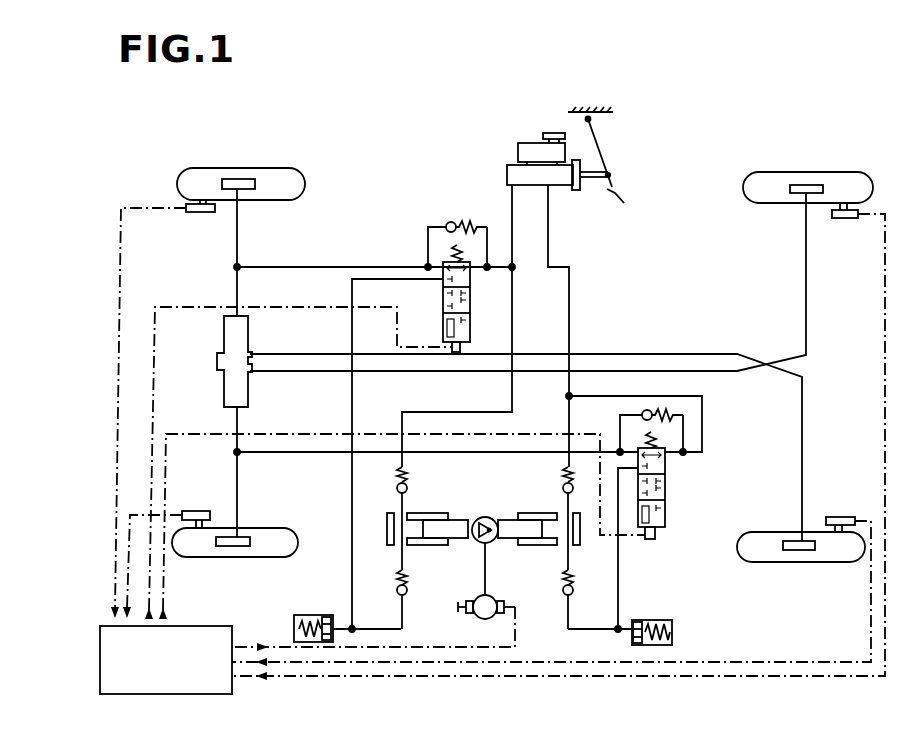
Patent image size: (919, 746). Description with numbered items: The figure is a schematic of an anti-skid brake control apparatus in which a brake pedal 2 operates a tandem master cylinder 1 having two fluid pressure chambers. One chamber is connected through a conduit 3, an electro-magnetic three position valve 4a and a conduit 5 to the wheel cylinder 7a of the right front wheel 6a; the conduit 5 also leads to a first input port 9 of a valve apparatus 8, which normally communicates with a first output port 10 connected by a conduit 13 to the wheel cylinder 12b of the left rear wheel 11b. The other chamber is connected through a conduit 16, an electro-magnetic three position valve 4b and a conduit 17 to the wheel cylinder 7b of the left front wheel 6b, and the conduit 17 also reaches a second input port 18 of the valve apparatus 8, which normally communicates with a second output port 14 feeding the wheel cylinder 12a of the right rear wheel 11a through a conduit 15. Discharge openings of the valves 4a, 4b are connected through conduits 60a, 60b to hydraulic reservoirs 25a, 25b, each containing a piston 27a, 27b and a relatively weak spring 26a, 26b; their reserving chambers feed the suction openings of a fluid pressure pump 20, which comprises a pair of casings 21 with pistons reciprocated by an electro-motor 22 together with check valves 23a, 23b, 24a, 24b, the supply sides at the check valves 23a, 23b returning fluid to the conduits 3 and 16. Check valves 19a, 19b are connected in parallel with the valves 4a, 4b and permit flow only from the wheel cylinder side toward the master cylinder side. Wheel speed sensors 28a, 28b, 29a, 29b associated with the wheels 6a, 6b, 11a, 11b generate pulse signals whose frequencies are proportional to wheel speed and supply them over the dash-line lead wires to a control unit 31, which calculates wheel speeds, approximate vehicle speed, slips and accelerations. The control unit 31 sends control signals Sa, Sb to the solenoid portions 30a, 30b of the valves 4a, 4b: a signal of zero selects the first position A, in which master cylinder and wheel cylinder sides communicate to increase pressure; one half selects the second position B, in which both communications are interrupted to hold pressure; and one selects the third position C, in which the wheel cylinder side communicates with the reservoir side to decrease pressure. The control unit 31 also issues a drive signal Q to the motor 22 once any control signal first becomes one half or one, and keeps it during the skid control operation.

The tandem master cylinder 1 is at (526, 138).
The brake pedal 2 is at (617, 181).
The conduit 3 is at (511, 203).
The electro-magnetic three position valve 4a is at (442, 298).
The electro-magnetic three position valve 4b is at (667, 485).
The conduit 5 is at (358, 267).
The right front wheel 6a is at (288, 178).
The left front wheel 6b is at (188, 556).
The wheel cylinder 7a is at (242, 179).
The wheel cylinder 7b is at (240, 547).
The valve apparatus 8 is at (222, 343).
The first input port 9 is at (236, 315).
The first output port 10 is at (252, 351).
The right rear wheel 11a is at (773, 182).
The left rear wheel 11b is at (768, 562).
The wheel cylinder 12a is at (815, 187).
The wheel cylinder 12b is at (814, 551).
The conduit 13 is at (608, 354).
The second output port 14 is at (252, 373).
The conduit 15 is at (722, 372).
The conduit 16 is at (550, 246).
The conduit 17 is at (373, 454).
The second input port 18 is at (236, 407).
The check valve 19a is at (449, 223).
The check valve 19b is at (641, 415).
The fluid pressure pump 20 is at (485, 515).
The casings 21 is at (418, 547).
The electro-motor 22 is at (489, 614).
The check valve 23a is at (563, 488).
The check valve 23b is at (407, 488).
The check valve 24a is at (562, 594).
The check valve 24b is at (396, 590).
The hydraulic reservoir 25a is at (302, 613).
The hydraulic reservoir 25b is at (658, 619).
The spring 26a is at (294, 627).
The spring 26b is at (672, 638).
The piston 27a is at (327, 613).
The piston 27b is at (637, 620).
The wheel speed sensor 28a is at (202, 213).
The wheel speed sensor 28b is at (197, 511).
The wheel speed sensor 29a is at (852, 220).
The wheel speed sensor 29b is at (840, 516).
The solenoid portion 30a is at (462, 347).
The solenoid portion 30b is at (655, 538).
The control unit 31 is at (163, 695).
The conduit 60a is at (350, 520).
The conduit 60b is at (616, 590).
The control signal Sa is at (155, 407).
The control signal Sb is at (188, 435).
The drive signal Q is at (408, 645).
The first position A is at (471, 280).
The second position B is at (471, 305).
The third position C is at (471, 331).